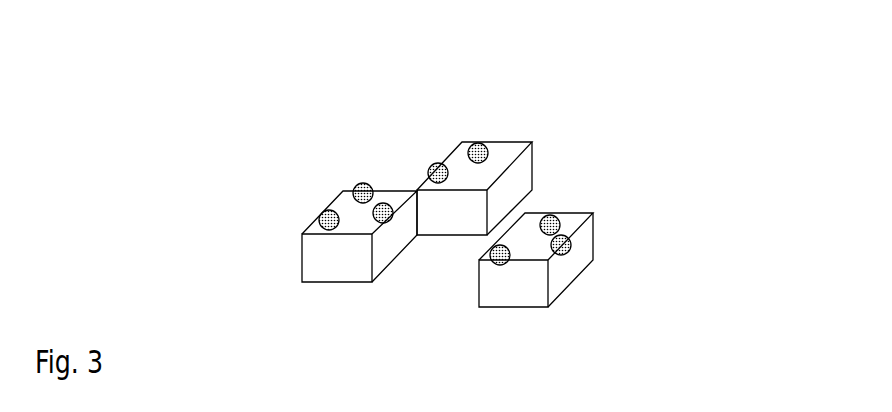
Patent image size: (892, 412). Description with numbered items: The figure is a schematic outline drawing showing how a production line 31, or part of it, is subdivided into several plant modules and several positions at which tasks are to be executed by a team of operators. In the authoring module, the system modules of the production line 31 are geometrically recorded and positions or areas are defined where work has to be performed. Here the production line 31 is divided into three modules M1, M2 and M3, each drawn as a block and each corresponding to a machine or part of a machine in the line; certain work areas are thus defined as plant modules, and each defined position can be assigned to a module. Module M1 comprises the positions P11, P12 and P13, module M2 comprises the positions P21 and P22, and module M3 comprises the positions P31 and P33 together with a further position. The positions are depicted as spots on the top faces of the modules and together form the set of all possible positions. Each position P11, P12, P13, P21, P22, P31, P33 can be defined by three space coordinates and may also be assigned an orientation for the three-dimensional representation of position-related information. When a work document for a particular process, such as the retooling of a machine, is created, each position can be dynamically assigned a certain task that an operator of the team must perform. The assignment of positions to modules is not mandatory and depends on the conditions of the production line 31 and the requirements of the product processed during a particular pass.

The production line 31 is at (630, 62).
The module M1 is at (338, 260).
The module M2 is at (442, 223).
The module M3 is at (517, 280).
The position P11 is at (320, 214).
The position P12 is at (353, 192).
The position P13 is at (374, 211).
The position P21 is at (430, 166).
The position P22 is at (468, 152).
The position P31 is at (505, 250).
The position P33 is at (561, 237).